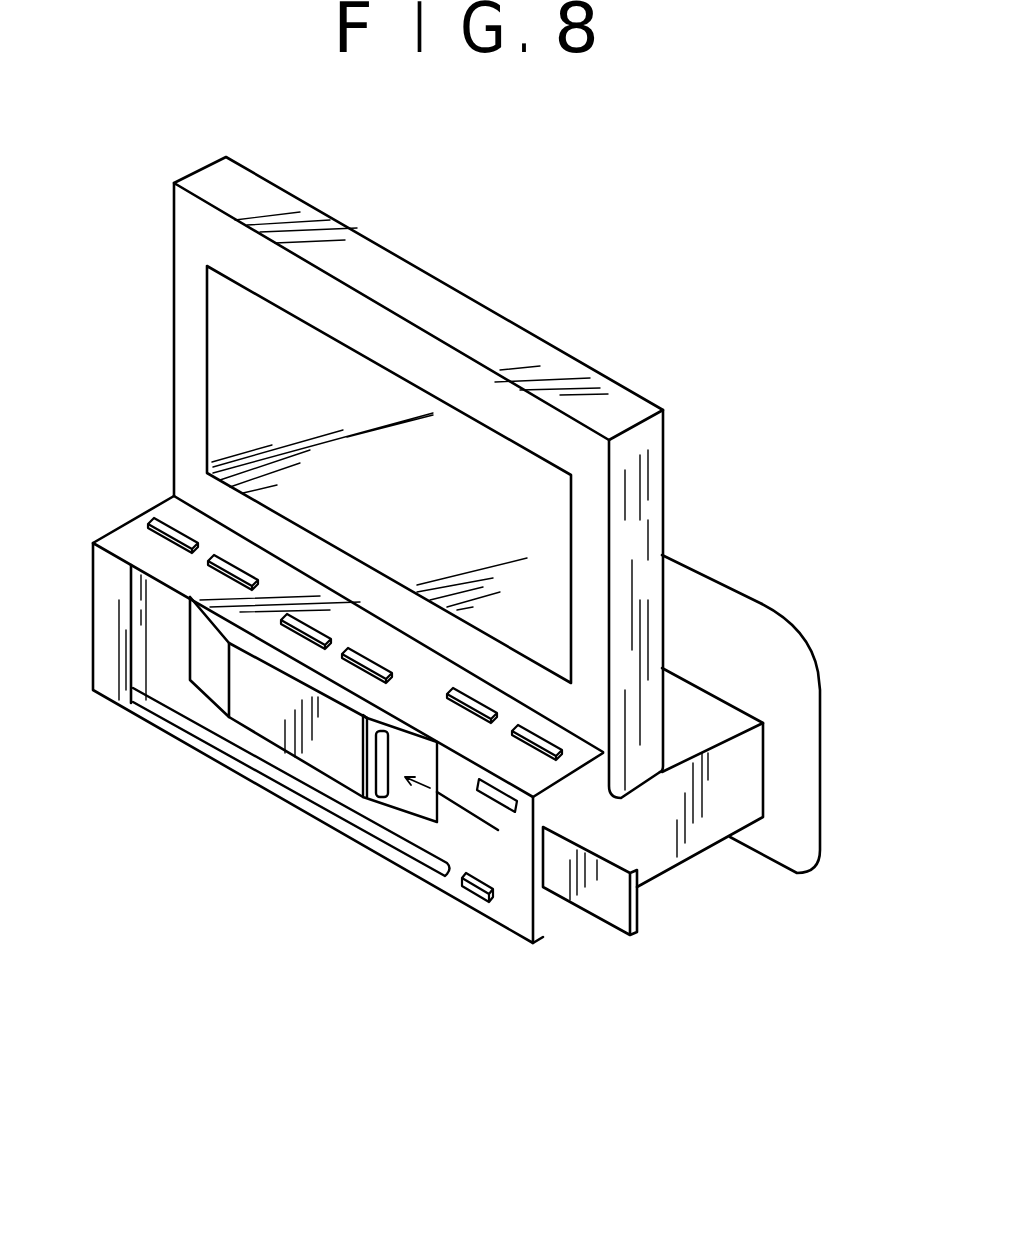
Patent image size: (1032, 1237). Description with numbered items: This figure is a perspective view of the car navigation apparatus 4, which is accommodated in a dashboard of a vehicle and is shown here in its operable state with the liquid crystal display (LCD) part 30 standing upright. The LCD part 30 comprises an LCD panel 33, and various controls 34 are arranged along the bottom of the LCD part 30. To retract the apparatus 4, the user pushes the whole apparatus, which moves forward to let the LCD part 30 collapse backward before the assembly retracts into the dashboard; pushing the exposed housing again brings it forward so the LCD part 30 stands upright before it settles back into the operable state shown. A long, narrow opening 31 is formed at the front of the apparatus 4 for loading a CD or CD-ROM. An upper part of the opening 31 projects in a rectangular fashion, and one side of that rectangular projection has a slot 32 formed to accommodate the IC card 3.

The IC card 3 is at (613, 913).
The car navigation apparatus 4 is at (670, 950).
The liquid crystal display (LCD) part 30 is at (642, 490).
The opening 31 is at (315, 800).
The slot 32 is at (382, 797).
The LCD panel 33 is at (378, 385).
The controls 34 is at (215, 525).